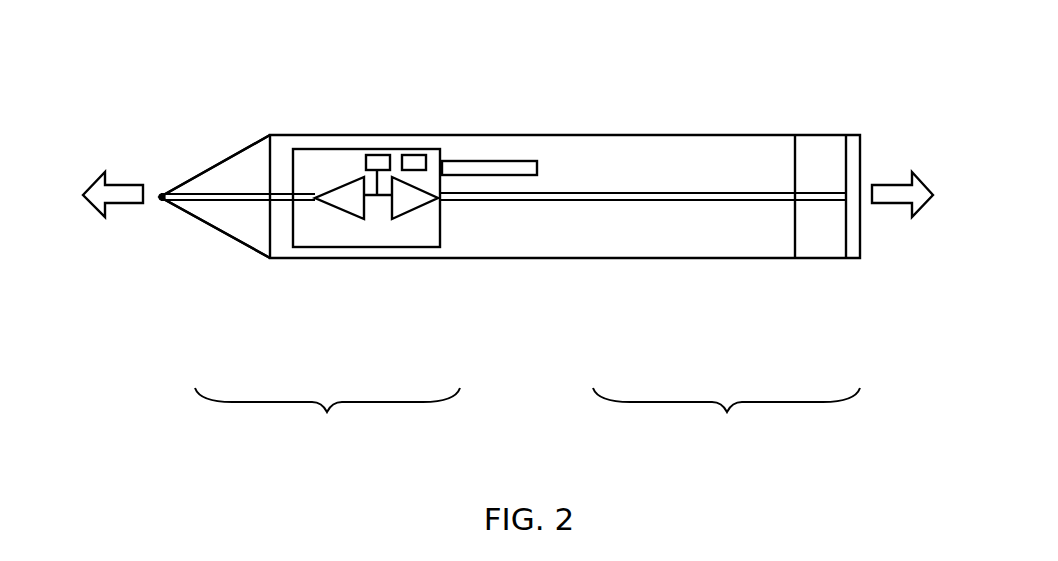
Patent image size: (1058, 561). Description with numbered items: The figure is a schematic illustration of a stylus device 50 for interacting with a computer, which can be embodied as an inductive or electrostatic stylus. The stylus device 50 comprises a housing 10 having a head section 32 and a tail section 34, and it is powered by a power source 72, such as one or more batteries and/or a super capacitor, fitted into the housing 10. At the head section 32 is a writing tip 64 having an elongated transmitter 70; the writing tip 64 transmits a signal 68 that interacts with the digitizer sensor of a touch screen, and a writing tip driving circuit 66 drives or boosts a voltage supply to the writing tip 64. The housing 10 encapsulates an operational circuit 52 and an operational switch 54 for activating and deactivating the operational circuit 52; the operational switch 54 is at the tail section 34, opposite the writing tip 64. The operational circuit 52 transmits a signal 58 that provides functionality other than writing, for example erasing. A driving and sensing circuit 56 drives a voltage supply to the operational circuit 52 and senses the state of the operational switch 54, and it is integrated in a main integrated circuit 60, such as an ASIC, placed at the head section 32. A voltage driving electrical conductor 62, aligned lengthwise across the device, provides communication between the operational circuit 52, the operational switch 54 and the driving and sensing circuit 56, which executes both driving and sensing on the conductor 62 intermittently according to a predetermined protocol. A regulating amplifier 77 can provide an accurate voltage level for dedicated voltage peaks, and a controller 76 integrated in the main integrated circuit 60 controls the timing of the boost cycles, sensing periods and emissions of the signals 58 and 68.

The housing 10 is at (497, 135).
The head section 32 is at (327, 413).
The tail section 34 is at (726, 416).
The stylus device 50 is at (222, 38).
The operational circuit 52 is at (828, 247).
The operational switch 54 is at (850, 248).
The driving and sensing circuit 56 is at (400, 205).
The signal 58 is at (885, 195).
The main integrated circuit 60 is at (315, 238).
The voltage driving electrical conductor 62 is at (485, 196).
The writing tip 64 is at (228, 217).
The writing tip driving circuit 66 is at (343, 207).
The signal 68 is at (105, 195).
The elongated transmitter 70 is at (228, 190).
The power source 72 is at (467, 170).
The controller 76 is at (380, 155).
The regulating amplifier 77 is at (418, 155).